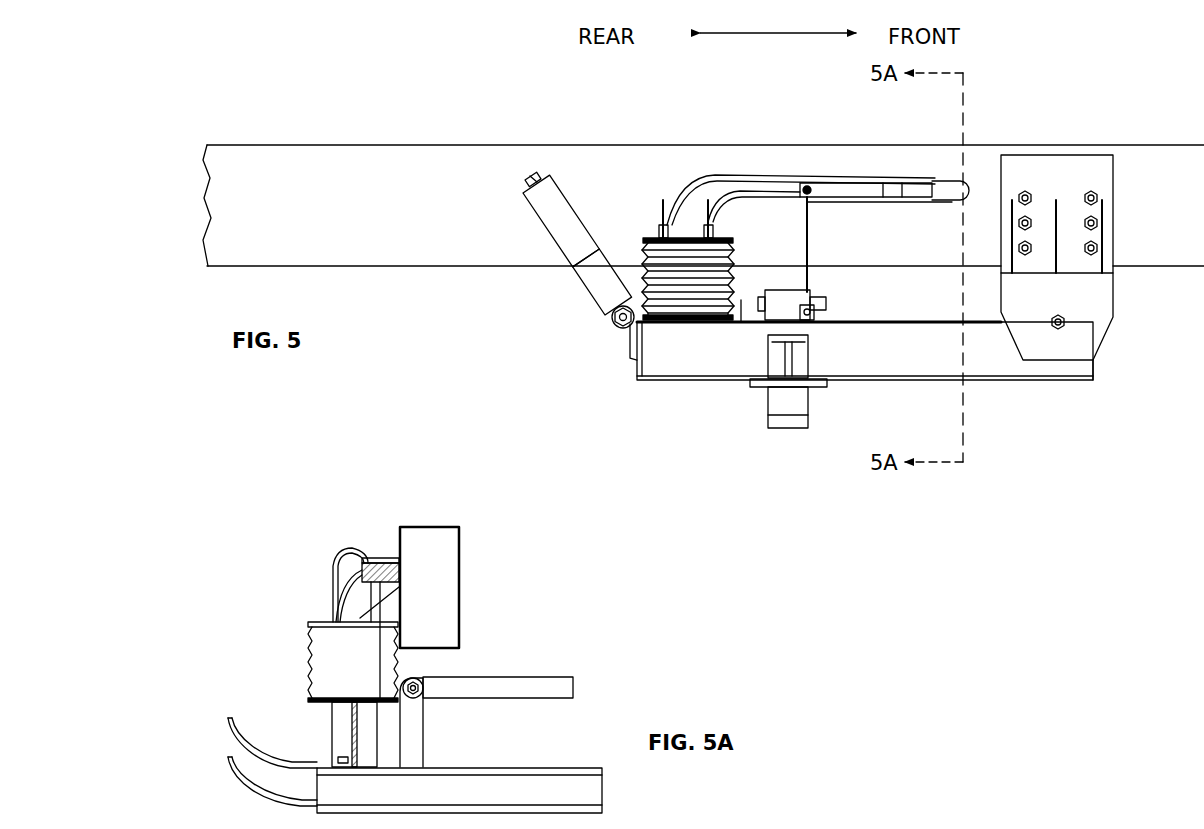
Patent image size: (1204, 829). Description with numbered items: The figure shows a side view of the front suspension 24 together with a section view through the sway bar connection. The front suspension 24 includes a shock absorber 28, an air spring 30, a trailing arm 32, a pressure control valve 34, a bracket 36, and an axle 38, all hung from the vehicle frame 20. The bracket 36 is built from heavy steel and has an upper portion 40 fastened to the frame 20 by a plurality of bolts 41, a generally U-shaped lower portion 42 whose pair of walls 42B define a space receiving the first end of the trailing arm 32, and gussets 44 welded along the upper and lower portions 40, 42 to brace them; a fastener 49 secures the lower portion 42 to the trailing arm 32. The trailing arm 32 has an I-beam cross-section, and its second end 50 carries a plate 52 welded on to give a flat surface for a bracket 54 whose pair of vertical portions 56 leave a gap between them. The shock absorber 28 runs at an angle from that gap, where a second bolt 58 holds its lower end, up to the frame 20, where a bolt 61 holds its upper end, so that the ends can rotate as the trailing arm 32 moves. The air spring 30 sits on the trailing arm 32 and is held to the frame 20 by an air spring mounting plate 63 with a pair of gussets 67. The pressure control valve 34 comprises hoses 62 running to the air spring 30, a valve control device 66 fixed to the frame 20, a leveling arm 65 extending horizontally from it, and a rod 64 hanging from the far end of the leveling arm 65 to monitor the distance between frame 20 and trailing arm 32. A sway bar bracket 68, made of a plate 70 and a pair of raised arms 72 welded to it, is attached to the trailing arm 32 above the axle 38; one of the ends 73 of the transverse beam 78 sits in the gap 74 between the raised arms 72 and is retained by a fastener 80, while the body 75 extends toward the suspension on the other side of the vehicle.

In FIG. 5A, the frame 20 is at (440, 530).
In FIG. 5, the front suspension 24 is at (1058, 390).
In FIG. 5, the shock absorber 28 is at (568, 263).
In FIG. 5, the air spring 30 is at (650, 246).
In FIG. 5A, the air spring 30 is at (330, 660).
In FIG. 5, the trailing arm 32 is at (896, 352).
In FIG. 5A, the trailing arm 32 is at (350, 724).
In FIG. 5, the pressure control valve 34 is at (938, 183).
In FIG. 5, the bracket 36 is at (1038, 170).
In FIG. 5, the axle 38 is at (785, 407).
In FIG. 5A, the axle 38 is at (247, 762).
In FIG. 5, the upper portion 40 is at (1069, 165).
In FIG. 5, the bolts 41 is at (1098, 220).
In FIG. 5, the lower portion 42 is at (1094, 314).
In FIG. 5, the walls 42B is at (1100, 300).
In FIG. 5, the gussets 44 is at (1058, 218).
In FIG. 5, the fasteners 49 is at (1065, 330).
In FIG. 5, the second end 50 is at (660, 400).
In FIG. 5, the plate 52 is at (636, 382).
In FIG. 5, the bracket 54 is at (630, 352).
In FIG. 5, the vertical portions 56 is at (619, 324).
In FIG. 5, the second bolt 58 is at (615, 319).
In FIG. 5, the bolt 61 is at (533, 177).
In FIG. 5A, the bolt 61 is at (338, 558).
In FIG. 5, the hoses 62 is at (695, 212).
In FIG. 5A, the hoses 62 is at (340, 598).
In FIG. 5, the air spring mounting plate 63 is at (664, 250).
In FIG. 5, the rod 64 is at (812, 207).
In FIG. 5A, the rod 64 is at (398, 586).
In FIG. 5, the leveling arm 65 is at (850, 190).
In FIG. 5, the valve control device 66 is at (956, 186).
In FIG. 5A, the valve control device 66 is at (383, 560).
In FIG. 5, the gussets 67 is at (669, 236).
In FIG. 5, the sway bar bracket 68 is at (814, 386).
In FIG. 5, the plate 70 is at (812, 412).
In FIG. 5A, the plate 70 is at (306, 773).
In FIG. 5, the raised arms 72 is at (827, 303).
In FIG. 5A, the raised arms 72 is at (416, 703).
In FIG. 5A, the ends 73 is at (406, 685).
In FIG. 5, the gap 74 is at (778, 287).
In FIG. 5A, the body 75 is at (535, 680).
In FIG. 5, the transverse beam 78 is at (798, 285).
In FIG. 5A, the transverse beam 78 is at (497, 676).
In FIG. 5, the fastener 80 is at (744, 306).
In FIG. 5A, the fastener 80 is at (421, 692).